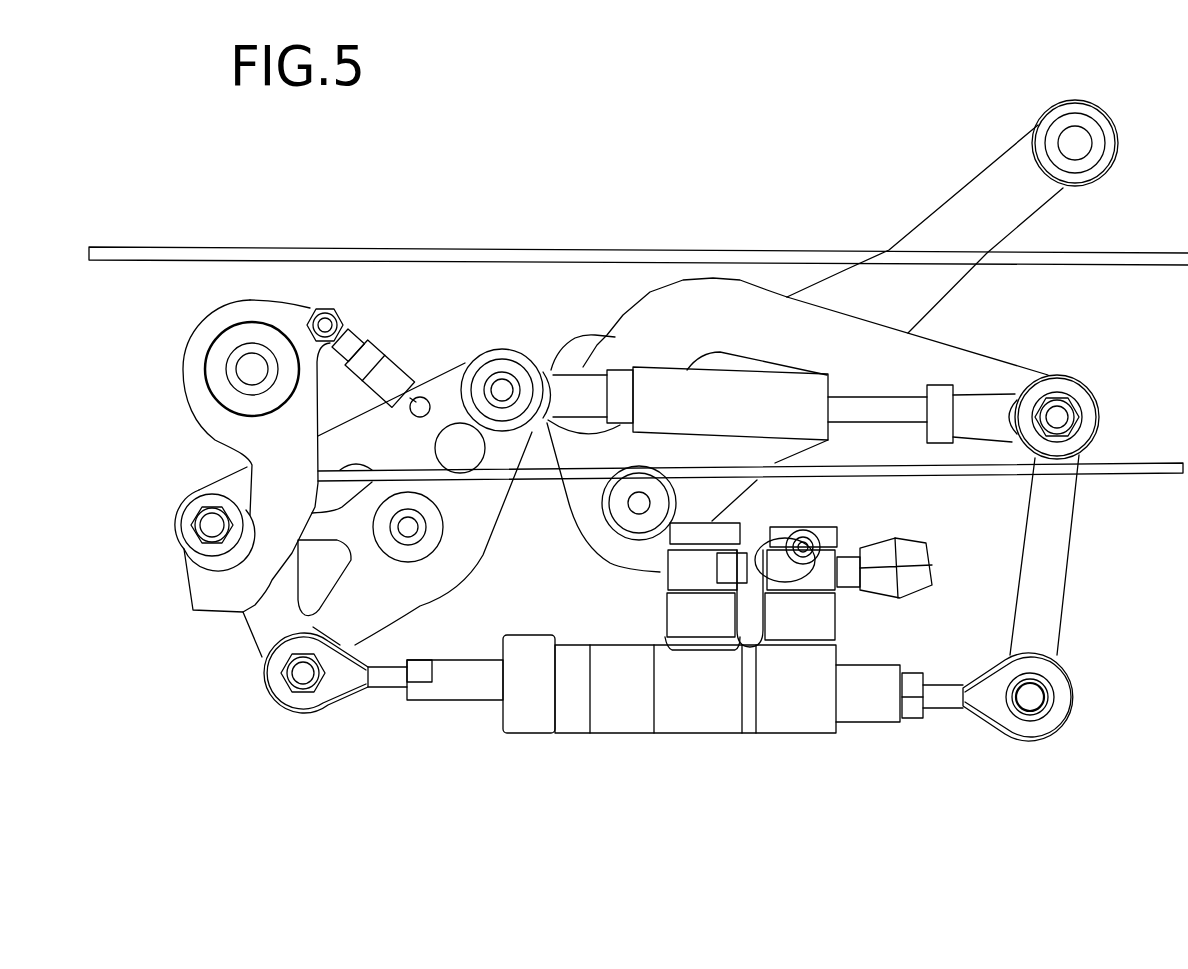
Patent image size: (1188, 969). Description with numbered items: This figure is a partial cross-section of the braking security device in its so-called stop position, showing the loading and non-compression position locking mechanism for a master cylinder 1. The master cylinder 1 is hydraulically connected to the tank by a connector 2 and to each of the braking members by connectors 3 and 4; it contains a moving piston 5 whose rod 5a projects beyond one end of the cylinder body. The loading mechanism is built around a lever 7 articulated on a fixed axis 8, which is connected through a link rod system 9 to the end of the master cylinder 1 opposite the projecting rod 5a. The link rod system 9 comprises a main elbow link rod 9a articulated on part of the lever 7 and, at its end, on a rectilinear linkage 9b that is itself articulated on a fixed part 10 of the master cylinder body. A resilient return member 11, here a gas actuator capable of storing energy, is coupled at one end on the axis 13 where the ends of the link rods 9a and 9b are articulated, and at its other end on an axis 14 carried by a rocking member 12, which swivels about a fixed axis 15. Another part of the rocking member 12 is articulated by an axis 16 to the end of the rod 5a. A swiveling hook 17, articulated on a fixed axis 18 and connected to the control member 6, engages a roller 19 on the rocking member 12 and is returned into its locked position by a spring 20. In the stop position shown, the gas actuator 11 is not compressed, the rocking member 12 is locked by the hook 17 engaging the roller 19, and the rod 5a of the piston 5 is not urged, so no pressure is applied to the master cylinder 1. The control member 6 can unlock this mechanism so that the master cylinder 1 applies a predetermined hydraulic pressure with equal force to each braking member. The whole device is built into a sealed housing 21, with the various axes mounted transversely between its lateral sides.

The master cylinder 1 is at (705, 716).
The connector 2 is at (746, 548).
The connector 3 is at (806, 541).
The connector 4 is at (912, 562).
The moving piston 5 is at (481, 698).
The rod 5a is at (383, 690).
The control member 6 is at (1158, 472).
The lever 7 is at (913, 245).
The fixed axis 8 is at (633, 505).
The link rod system 9 is at (841, 466).
The main elbow link rod 9a is at (950, 370).
The rectilinear linkage 9b is at (1050, 582).
The fixed part 10 is at (1054, 712).
The resilient return member 11 is at (822, 425).
The rocking member 12 is at (412, 600).
The axis 13 is at (1088, 414).
The axis 14 is at (512, 378).
The fixed axis 15 is at (420, 530).
The axis 16 is at (300, 680).
The swiveling hook 17 is at (203, 584).
The fixed axis 18 is at (245, 369).
The roller 19 is at (187, 520).
The spring 20 is at (385, 362).
The sealed housing 21 is at (274, 258).